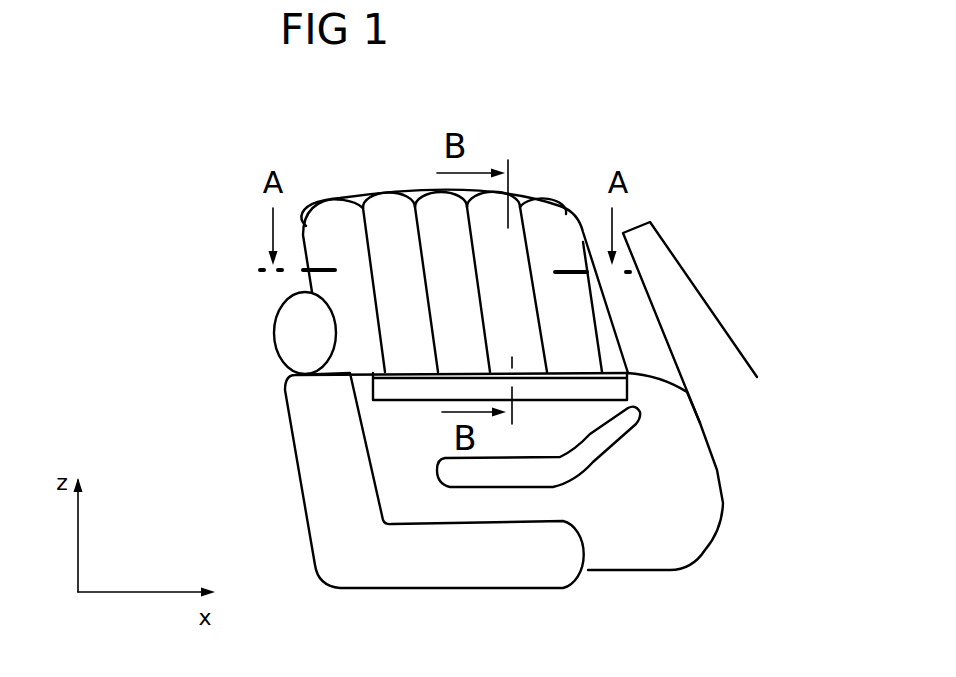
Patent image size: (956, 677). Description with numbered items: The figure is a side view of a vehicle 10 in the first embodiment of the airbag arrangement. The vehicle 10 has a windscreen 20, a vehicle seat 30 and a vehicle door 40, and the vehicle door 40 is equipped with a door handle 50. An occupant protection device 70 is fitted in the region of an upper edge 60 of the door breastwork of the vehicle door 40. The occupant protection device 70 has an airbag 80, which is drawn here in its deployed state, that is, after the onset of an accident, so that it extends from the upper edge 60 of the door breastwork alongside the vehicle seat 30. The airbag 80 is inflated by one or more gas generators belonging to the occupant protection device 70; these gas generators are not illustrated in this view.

The vehicle 10 is at (725, 395).
The windscreen 20 is at (683, 297).
The vehicle seat 30 is at (422, 567).
The vehicle door 40 is at (685, 442).
The door handle 50 is at (588, 460).
The upper edge of a door breastwork 60 is at (608, 368).
The occupant protection device 70 is at (552, 148).
The airbag 80 is at (394, 228).